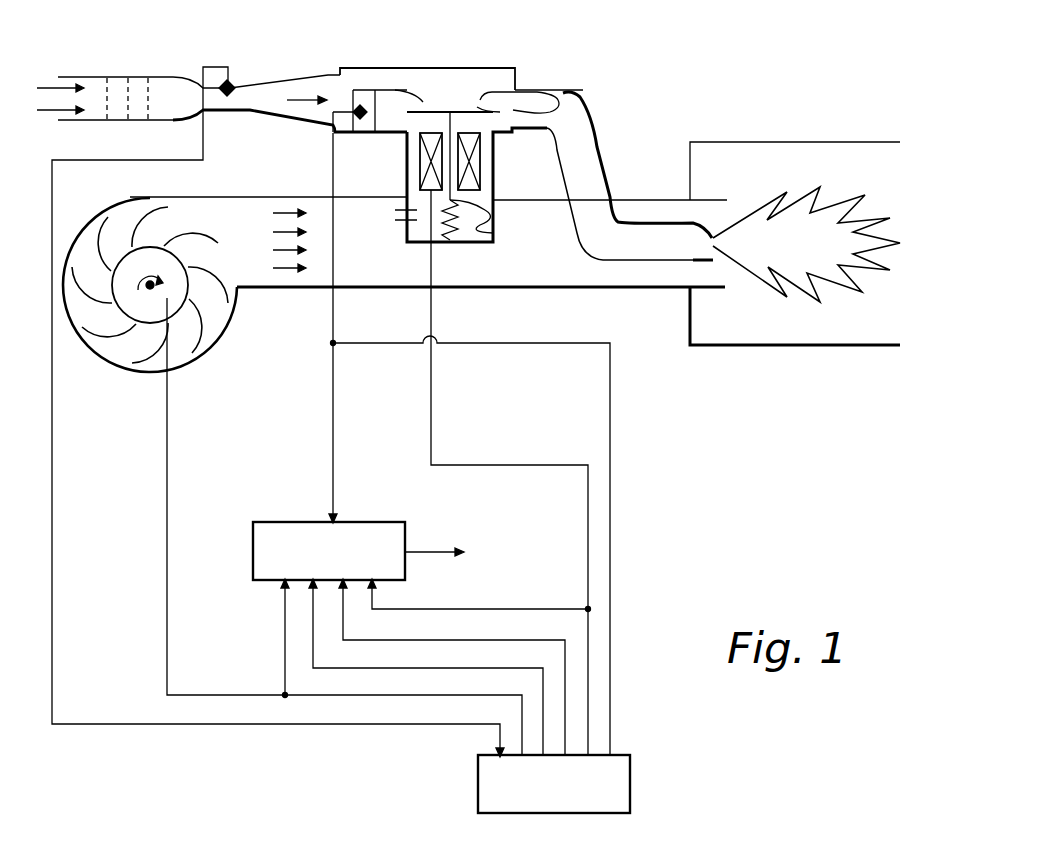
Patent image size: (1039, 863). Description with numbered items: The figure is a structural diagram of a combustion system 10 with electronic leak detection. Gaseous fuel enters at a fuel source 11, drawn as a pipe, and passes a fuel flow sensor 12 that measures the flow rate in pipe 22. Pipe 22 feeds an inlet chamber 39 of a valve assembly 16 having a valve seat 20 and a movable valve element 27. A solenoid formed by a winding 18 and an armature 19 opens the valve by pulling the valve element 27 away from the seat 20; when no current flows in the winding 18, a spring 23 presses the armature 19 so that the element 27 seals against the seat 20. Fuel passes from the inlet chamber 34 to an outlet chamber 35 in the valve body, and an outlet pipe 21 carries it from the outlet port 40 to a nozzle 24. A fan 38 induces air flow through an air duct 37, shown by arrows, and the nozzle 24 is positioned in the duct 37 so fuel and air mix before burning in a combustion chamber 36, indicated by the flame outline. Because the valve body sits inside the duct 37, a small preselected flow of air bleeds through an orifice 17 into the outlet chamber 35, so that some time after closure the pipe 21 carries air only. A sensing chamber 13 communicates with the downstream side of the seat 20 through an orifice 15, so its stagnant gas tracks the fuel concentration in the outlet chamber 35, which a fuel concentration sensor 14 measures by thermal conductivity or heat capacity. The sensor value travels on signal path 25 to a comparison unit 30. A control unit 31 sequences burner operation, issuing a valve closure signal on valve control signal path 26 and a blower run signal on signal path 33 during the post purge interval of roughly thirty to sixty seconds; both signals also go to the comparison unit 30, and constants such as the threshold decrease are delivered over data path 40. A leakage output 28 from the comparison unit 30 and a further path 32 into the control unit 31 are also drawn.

The combustion system 10 is at (652, 426).
The fuel source 11 is at (118, 78).
The fuel flow sensor 12 is at (234, 86).
The sensing chamber 13 is at (357, 88).
The fuel concentration sensor 14 is at (362, 120).
The orifice 15 is at (398, 90).
The valve assembly 16 is at (516, 213).
The orifice 17 is at (395, 218).
The winding 18 is at (412, 150).
The armature 19 is at (493, 233).
The valve seat 20 is at (532, 94).
The outlet pipe 21 is at (598, 140).
The pipe 22 is at (306, 76).
The spring 23 is at (445, 243).
The nozzle 24 is at (713, 256).
The signal path 25 is at (333, 318).
The valve control signal path 26 is at (431, 415).
The valve element 27 is at (463, 110).
The leakage signal output 28 is at (425, 550).
The comparison unit 30 is at (253, 542).
The control unit 31 is at (478, 780).
The threshold signal line 32 is at (543, 717).
The signal path 33 is at (167, 648).
The inlet chamber 34 is at (203, 153).
The outlet chamber 35 is at (413, 145).
The combustion chamber 36 is at (800, 345).
The air duct 37 is at (512, 290).
The fan 38 is at (100, 358).
The inlet chamber 39 is at (445, 76).
The outlet port 40 is at (567, 648).